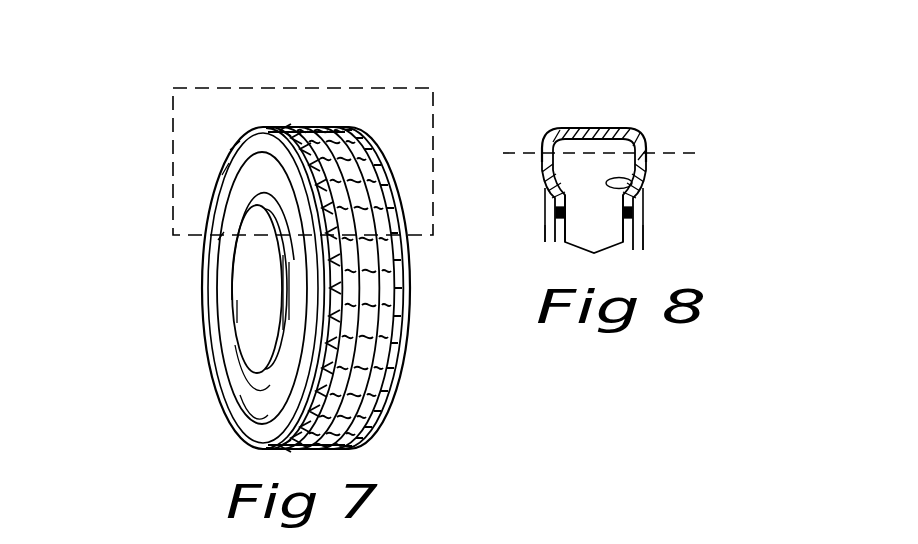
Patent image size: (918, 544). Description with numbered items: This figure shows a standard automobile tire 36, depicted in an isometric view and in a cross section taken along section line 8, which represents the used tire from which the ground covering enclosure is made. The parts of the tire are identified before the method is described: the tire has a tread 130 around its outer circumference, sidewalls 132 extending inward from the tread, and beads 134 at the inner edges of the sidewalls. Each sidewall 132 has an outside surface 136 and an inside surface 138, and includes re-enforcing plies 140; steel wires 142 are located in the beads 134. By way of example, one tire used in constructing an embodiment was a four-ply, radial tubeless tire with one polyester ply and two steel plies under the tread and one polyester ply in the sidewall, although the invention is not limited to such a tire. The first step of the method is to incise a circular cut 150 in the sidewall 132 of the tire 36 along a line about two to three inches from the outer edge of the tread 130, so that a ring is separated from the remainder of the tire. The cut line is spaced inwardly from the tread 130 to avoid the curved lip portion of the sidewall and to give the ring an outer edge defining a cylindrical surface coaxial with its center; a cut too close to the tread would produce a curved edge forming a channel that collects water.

In FIG. 7, the section line 8 is at (173, 88).
In FIG. 7, the used automobile tire 36 is at (182, 343).
In FIG. 8, the used automobile tire 36 is at (557, 133).
In FIG. 7, the tread 130 is at (373, 380).
In FIG. 8, the tread 130 is at (590, 133).
In FIG. 7, the sidewall 132 is at (231, 385).
In FIG. 8, the sidewall 132 is at (548, 197).
In FIG. 7, the bead 134 is at (280, 287).
In FIG. 8, the bead 134 is at (594, 236).
In FIG. 7, the outside surface 136 is at (252, 398).
In FIG. 8, the outside surface 136 is at (548, 229).
In FIG. 8, the inside surface 138 is at (606, 185).
In FIG. 8, the re-enforcing plies 140 is at (556, 182).
In FIG. 8, the steel wires 142 is at (640, 213).
In FIG. 7, the circular cut 150 is at (222, 190).
In FIG. 8, the circular cut 150 is at (664, 150).